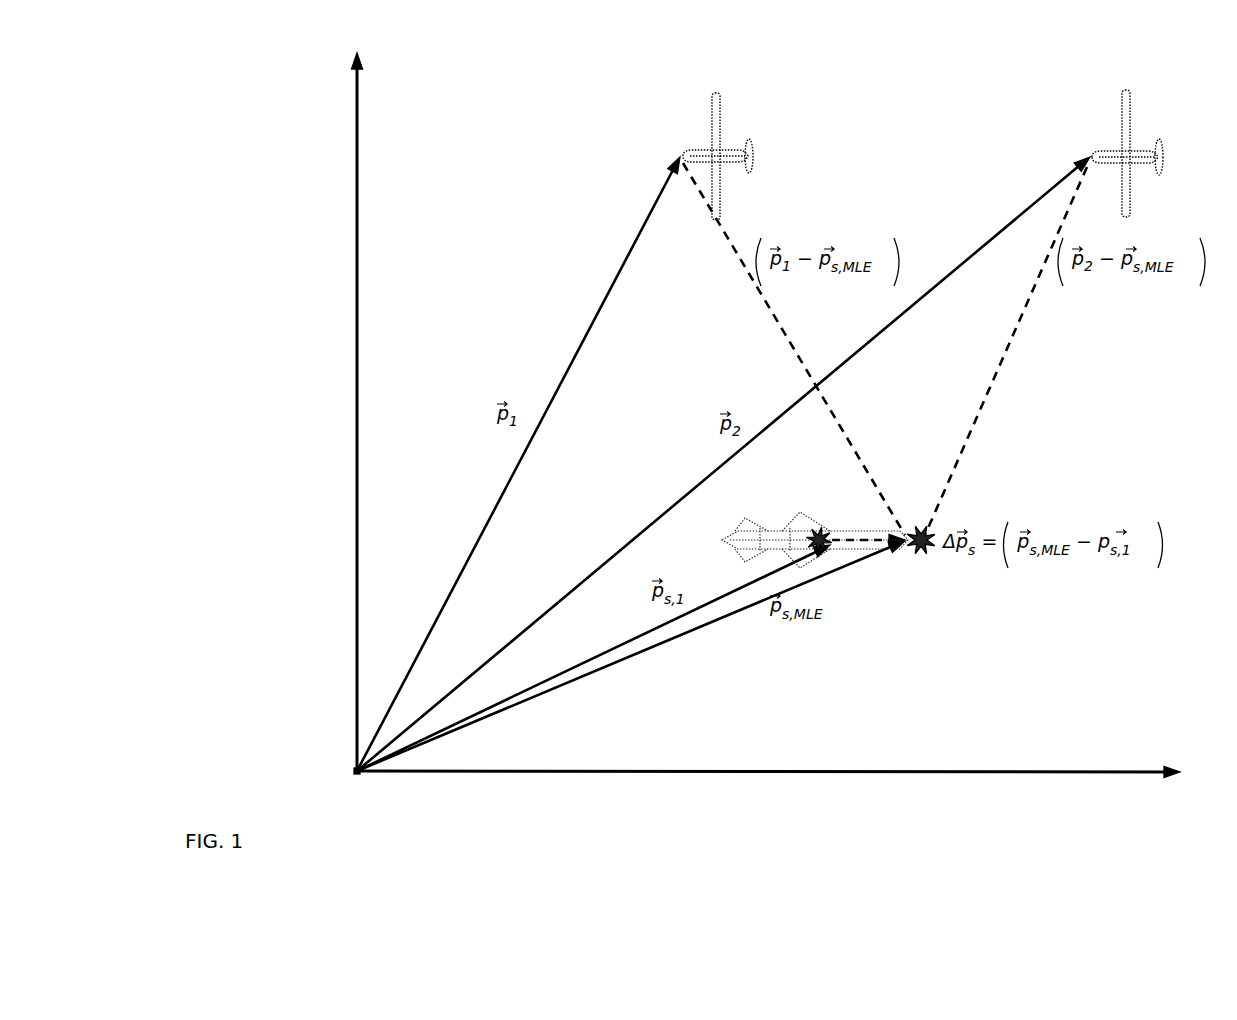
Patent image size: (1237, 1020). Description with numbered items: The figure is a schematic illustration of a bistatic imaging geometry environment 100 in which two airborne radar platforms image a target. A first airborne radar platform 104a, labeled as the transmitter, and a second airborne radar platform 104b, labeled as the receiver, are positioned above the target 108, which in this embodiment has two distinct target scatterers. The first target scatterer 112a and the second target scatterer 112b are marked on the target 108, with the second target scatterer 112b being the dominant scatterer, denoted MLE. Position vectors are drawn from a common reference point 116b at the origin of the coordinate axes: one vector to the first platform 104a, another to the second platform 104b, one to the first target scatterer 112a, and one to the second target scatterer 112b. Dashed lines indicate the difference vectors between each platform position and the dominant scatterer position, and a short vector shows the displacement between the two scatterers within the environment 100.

The bistatic imaging geometry environment 100 is at (290, 700).
The first airborne radar platform 104a is at (748, 150).
The second airborne radar platform 104b is at (1160, 140).
The target 108 is at (768, 528).
The first target scatterer 112a is at (821, 530).
The second target scatterer 112b is at (933, 552).
The coordinate origin 116b is at (360, 775).